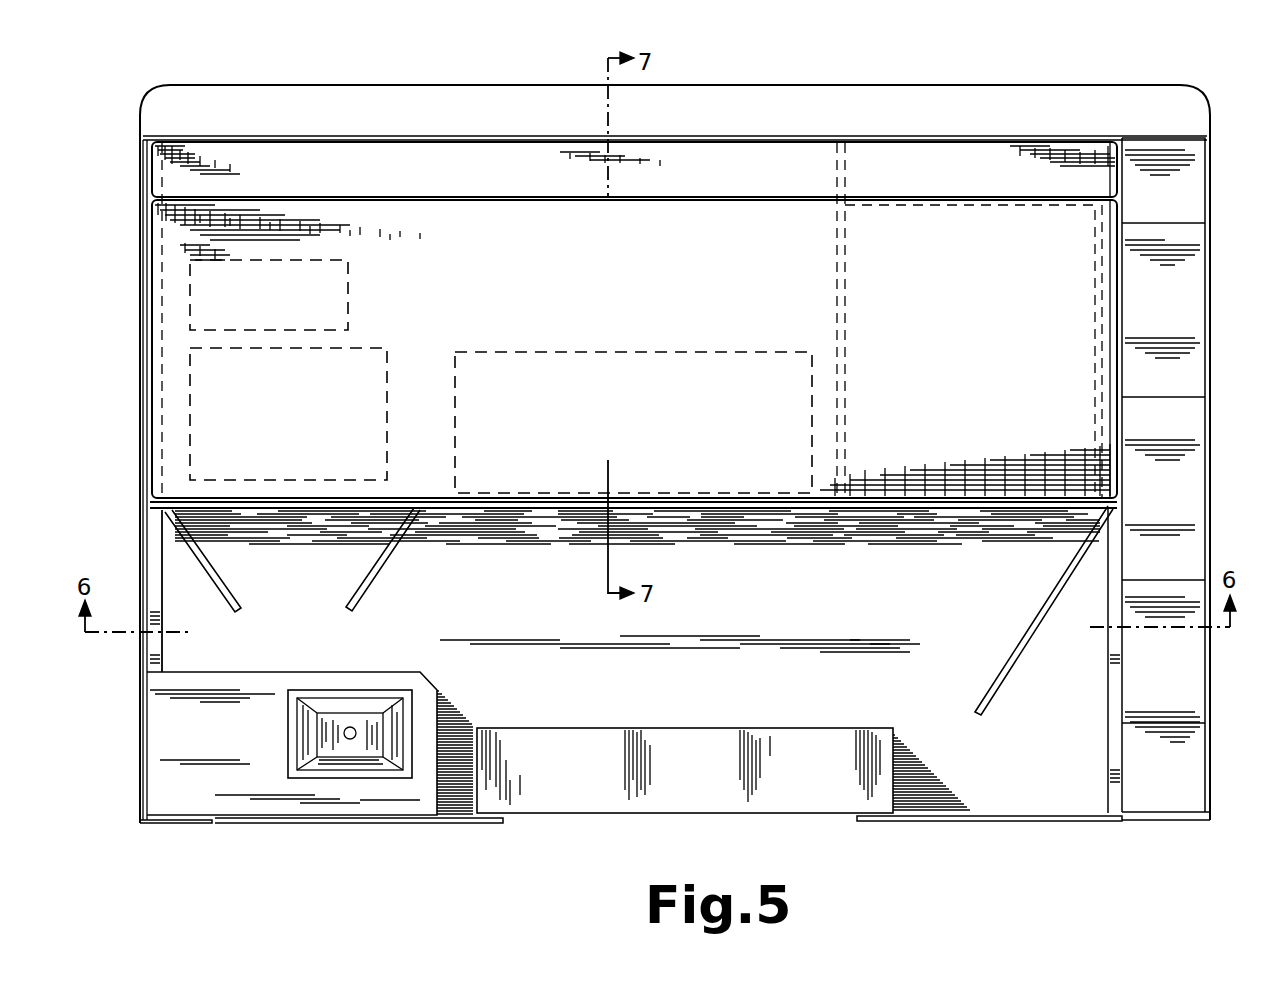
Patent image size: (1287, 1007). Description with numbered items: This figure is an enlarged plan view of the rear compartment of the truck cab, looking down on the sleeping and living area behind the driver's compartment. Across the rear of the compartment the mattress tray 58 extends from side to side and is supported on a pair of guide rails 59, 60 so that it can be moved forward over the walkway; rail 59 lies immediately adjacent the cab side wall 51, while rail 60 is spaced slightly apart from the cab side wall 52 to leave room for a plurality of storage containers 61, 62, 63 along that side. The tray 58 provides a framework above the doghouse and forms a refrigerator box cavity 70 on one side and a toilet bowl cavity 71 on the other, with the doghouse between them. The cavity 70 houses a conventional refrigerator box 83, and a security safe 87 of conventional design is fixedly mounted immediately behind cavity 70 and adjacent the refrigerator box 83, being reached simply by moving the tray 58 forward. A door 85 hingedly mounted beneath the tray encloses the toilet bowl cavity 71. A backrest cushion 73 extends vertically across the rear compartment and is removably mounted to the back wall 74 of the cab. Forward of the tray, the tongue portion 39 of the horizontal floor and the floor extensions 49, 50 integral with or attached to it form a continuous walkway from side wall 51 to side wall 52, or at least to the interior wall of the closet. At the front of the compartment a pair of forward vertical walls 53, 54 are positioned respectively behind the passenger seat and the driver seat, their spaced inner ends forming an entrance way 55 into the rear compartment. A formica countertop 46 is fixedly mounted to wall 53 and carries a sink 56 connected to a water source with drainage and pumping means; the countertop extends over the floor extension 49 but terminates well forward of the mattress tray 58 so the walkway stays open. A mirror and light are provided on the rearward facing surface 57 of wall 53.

The tongue portion 39 is at (730, 605).
The formica countertop 46 is at (198, 777).
The floor extension 49 is at (347, 655).
The floor extension 50 is at (952, 632).
The side wall 51 is at (150, 517).
The side wall 52 is at (1208, 542).
The forward vertical wall 53 is at (457, 812).
The forward vertical wall 54 is at (1017, 810).
The entrance way 55 is at (632, 824).
The sink 56 is at (350, 762).
The rearward facing surface 57 is at (263, 812).
The mattress tray 58 is at (462, 512).
The guide rail 59 is at (160, 597).
The guide rail 60 is at (1113, 787).
The storage container 61 is at (1195, 326).
The storage container 62 is at (1193, 493).
The storage container 63 is at (1198, 708).
The refrigerator box cavity 70 is at (292, 516).
The toilet bowl cavity 71 is at (965, 516).
The backrest cushion 73 is at (978, 160).
The back wall 74 is at (458, 137).
The refrigerator box 83 is at (190, 377).
The door 85 is at (1012, 655).
The security safe 87 is at (190, 307).